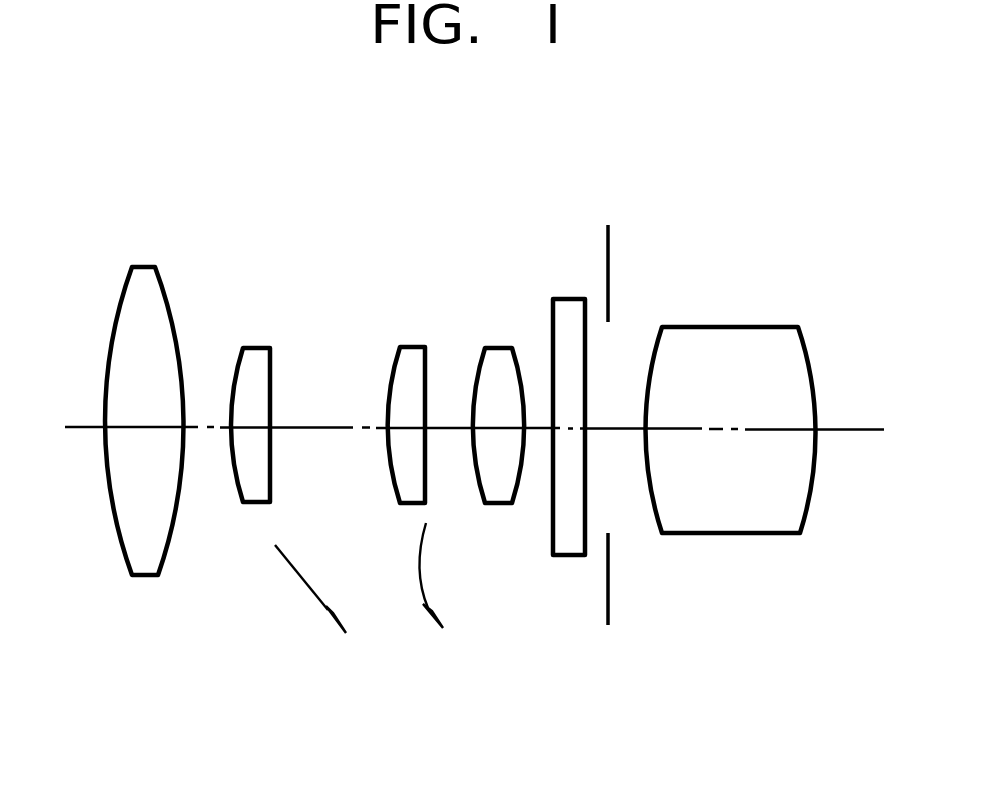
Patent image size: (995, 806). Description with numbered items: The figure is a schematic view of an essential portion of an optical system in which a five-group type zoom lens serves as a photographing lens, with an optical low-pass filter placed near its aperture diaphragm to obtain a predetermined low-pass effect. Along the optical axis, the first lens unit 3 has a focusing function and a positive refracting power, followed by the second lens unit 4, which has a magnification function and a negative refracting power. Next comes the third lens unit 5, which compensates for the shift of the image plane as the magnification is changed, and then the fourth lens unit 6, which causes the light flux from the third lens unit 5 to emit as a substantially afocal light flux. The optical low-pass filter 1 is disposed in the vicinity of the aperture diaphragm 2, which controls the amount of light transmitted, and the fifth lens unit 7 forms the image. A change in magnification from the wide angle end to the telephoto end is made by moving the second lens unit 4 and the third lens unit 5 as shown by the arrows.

The optical low-pass filter 1 is at (570, 298).
The aperture diaphragm 2 is at (612, 240).
The first lens unit 3 is at (151, 267).
The second lens unit 4 is at (255, 346).
The third lens unit 5 is at (412, 345).
The fourth lens unit 6 is at (493, 346).
The fifth lens unit 7 is at (735, 327).